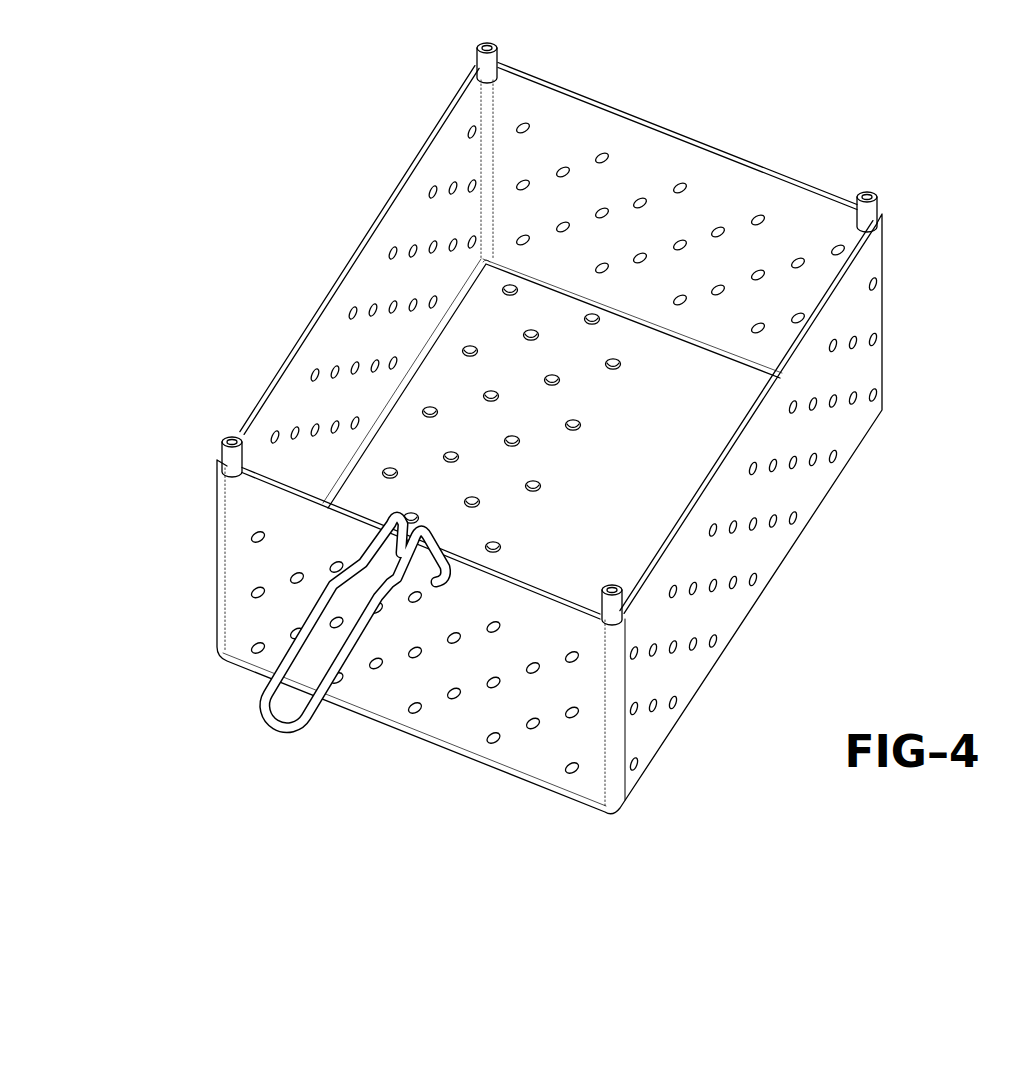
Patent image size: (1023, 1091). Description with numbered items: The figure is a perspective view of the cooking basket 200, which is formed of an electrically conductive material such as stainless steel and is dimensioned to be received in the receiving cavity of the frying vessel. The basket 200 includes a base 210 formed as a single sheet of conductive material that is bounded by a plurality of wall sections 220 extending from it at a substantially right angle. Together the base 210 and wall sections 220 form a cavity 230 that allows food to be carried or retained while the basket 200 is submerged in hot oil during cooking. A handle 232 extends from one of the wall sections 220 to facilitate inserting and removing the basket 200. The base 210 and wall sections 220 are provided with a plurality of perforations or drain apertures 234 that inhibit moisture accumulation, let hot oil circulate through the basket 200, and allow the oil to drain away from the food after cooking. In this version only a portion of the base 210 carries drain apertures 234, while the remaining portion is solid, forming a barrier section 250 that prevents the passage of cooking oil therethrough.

The cooking basket 200 is at (562, 433).
The base 210 is at (549, 427).
The wall sections 220 is at (790, 207).
The cavity 230 is at (564, 322).
The handle 232 is at (282, 728).
The drain apertures 234 is at (757, 221).
The barrier section 250 is at (660, 476).